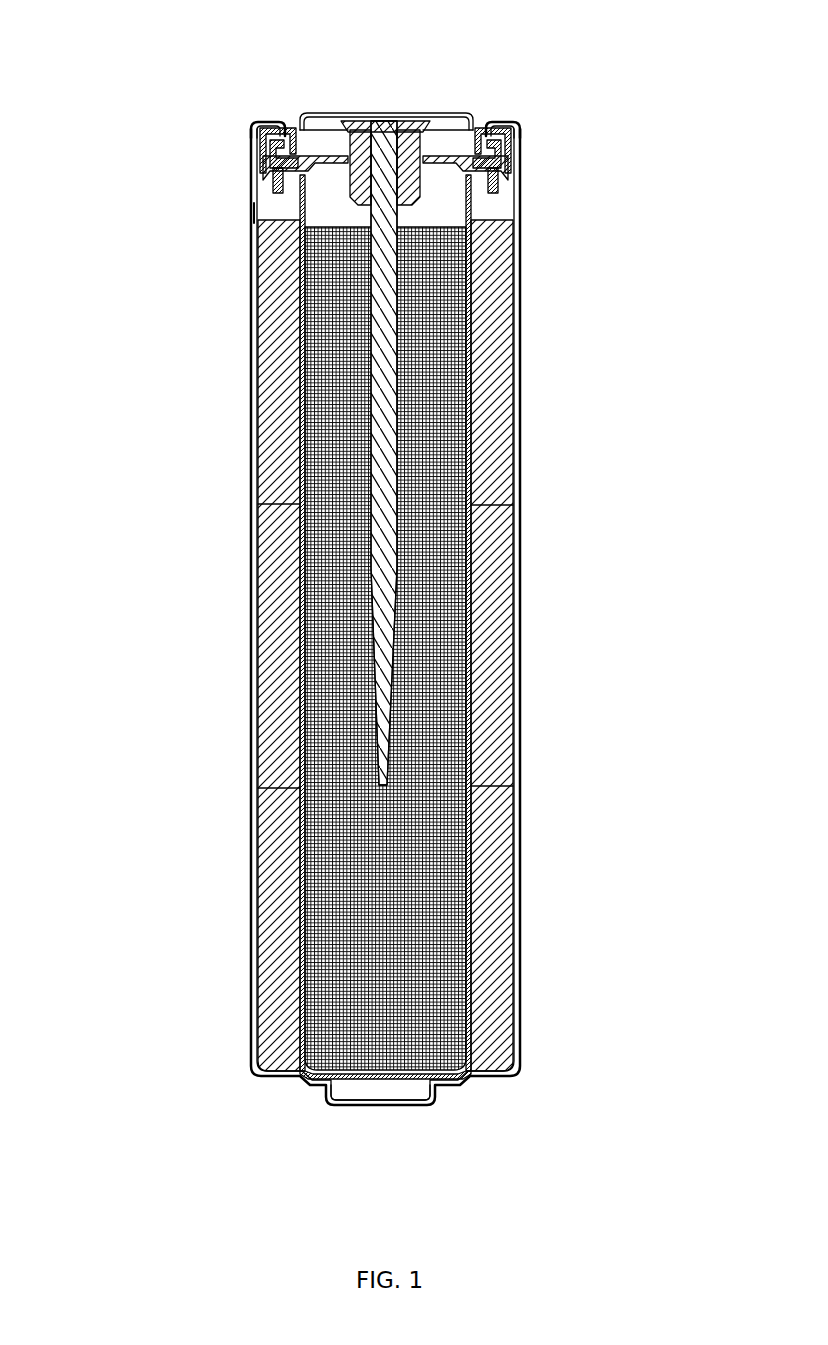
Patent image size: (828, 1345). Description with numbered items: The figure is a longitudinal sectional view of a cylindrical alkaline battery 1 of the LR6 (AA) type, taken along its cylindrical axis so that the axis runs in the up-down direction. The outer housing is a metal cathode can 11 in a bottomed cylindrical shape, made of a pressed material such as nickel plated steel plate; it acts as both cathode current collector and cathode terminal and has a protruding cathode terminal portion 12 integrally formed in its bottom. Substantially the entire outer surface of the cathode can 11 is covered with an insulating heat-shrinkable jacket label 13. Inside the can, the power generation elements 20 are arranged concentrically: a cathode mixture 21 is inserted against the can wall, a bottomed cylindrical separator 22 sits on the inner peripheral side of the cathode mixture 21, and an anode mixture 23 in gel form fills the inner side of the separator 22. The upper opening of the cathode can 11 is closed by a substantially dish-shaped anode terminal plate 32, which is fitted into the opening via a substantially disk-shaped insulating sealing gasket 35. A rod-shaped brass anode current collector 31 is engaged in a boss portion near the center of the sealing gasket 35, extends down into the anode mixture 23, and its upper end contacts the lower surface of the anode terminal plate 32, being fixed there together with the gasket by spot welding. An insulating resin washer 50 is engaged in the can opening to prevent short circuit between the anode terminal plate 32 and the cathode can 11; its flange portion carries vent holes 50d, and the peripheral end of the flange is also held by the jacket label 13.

The alkaline battery 1 is at (381, 608).
The cathode can 11 is at (248, 262).
The cathode terminal portion 12 is at (345, 1097).
The jacket label 13 is at (245, 205).
The power generation elements 20 is at (284, 600).
The cathode mixture 21 is at (97, 642).
The separator 22 is at (292, 558).
The anode mixture 23 is at (328, 647).
The anode current collector 31 is at (363, 710).
The anode terminal plate 32 is at (437, 106).
The sealing gasket 35 is at (338, 116).
The washer 50 is at (405, 115).
The vent hole 50d is at (272, 108).